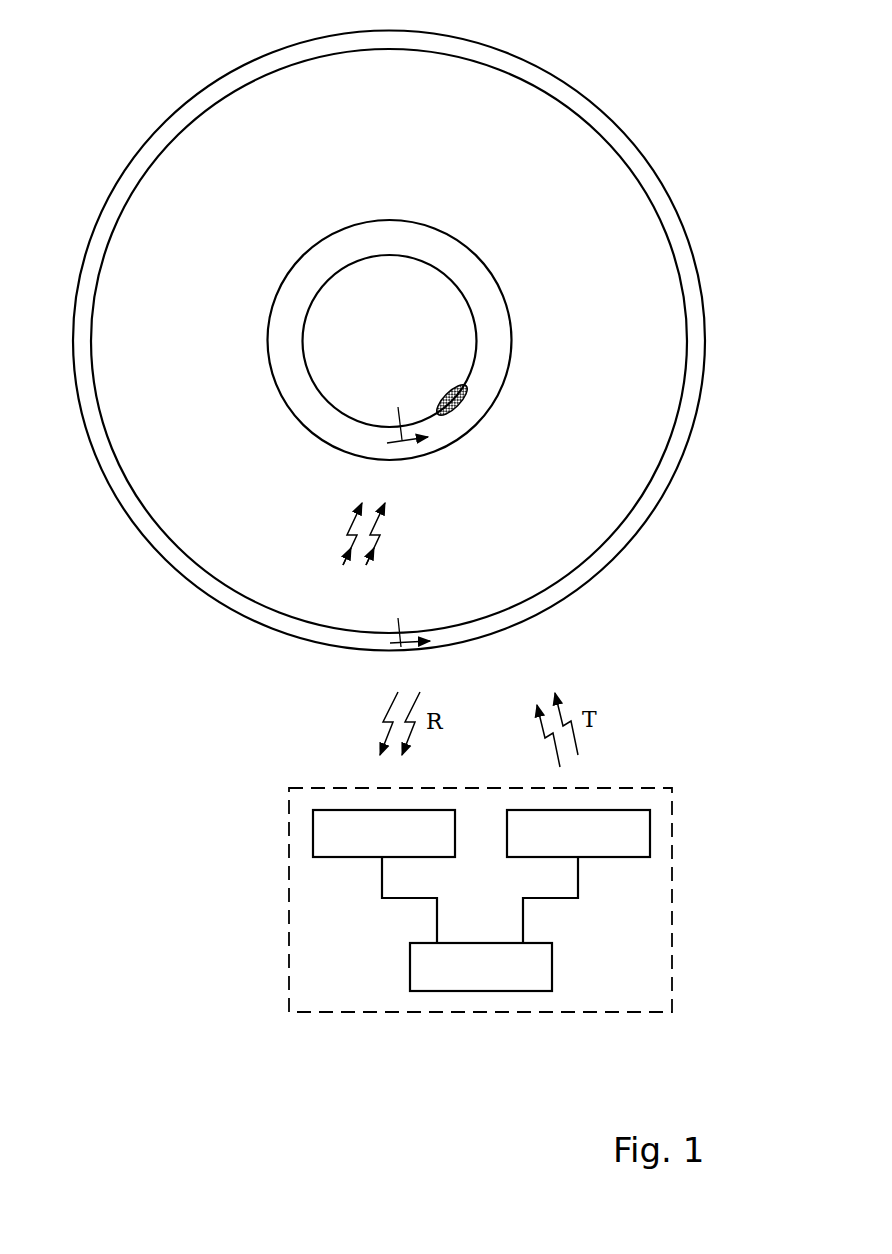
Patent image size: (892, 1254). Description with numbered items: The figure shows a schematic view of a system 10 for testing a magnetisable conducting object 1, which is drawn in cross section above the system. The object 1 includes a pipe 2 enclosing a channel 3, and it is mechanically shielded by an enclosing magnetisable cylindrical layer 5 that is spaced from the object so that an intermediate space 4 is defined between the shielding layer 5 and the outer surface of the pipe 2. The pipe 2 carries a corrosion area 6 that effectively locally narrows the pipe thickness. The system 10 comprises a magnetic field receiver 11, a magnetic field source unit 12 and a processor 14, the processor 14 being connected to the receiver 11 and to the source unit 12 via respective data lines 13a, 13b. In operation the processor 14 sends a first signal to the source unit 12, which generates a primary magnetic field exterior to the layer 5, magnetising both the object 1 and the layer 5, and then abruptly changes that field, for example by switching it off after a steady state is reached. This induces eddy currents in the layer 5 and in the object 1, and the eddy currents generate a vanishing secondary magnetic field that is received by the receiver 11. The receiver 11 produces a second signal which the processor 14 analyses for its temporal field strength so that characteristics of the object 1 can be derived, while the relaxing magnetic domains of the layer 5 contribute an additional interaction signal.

The magnetisable conducting object 1 is at (421, 341).
The pipe 2 is at (487, 338).
The channel 3 is at (396, 304).
The intermediate space 4 is at (589, 425).
The magnetisable cylindrical layer 5 is at (693, 338).
The corrosion area 6 is at (457, 407).
The system 10 is at (672, 950).
The magnetic field receiver 11 is at (394, 845).
The magnetic field source unit 12 is at (591, 845).
The data line 13a is at (382, 887).
The data line 13b is at (580, 887).
The processor 14 is at (492, 978).